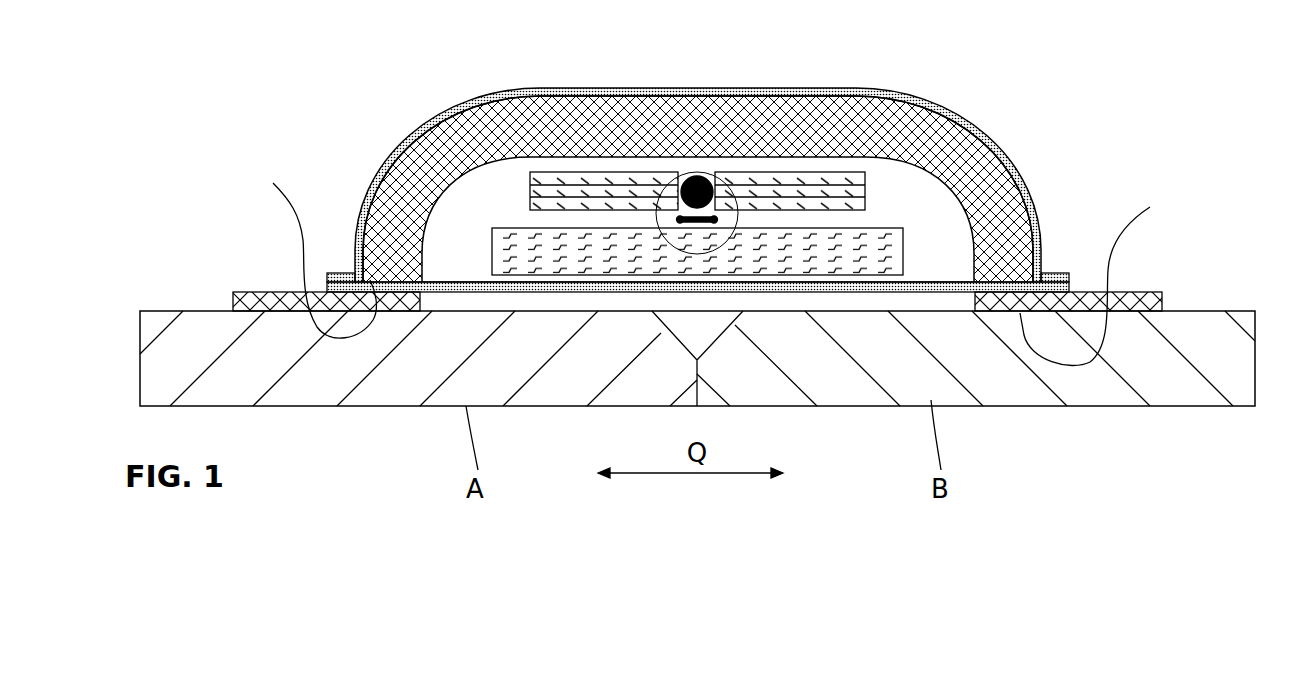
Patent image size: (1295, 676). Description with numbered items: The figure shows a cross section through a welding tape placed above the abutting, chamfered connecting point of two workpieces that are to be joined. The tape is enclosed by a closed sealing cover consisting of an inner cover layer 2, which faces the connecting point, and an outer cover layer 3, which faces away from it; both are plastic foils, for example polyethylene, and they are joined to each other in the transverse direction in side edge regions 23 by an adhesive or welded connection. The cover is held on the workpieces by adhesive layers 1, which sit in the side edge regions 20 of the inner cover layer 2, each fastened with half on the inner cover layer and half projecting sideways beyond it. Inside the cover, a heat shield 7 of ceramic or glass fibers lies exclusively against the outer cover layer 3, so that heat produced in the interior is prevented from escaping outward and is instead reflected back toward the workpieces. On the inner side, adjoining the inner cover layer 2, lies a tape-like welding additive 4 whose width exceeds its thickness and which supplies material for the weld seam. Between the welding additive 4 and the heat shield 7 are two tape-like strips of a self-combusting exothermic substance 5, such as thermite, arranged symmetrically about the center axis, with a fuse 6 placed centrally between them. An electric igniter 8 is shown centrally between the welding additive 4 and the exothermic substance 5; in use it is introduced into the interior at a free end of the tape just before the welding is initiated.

The adhesive layer 1 is at (260, 292).
The inner cover layer 2 is at (932, 285).
The outer cover layer 3 is at (940, 112).
The welding additive 4 is at (497, 250).
The exothermic substance 5 is at (547, 187).
The fuse 6 is at (697, 190).
The heat shield 7 is at (513, 113).
The igniter 8 is at (718, 215).
The side edge region of the inner cover layer 20 is at (713, 262).
The side edge region 23 is at (347, 272).